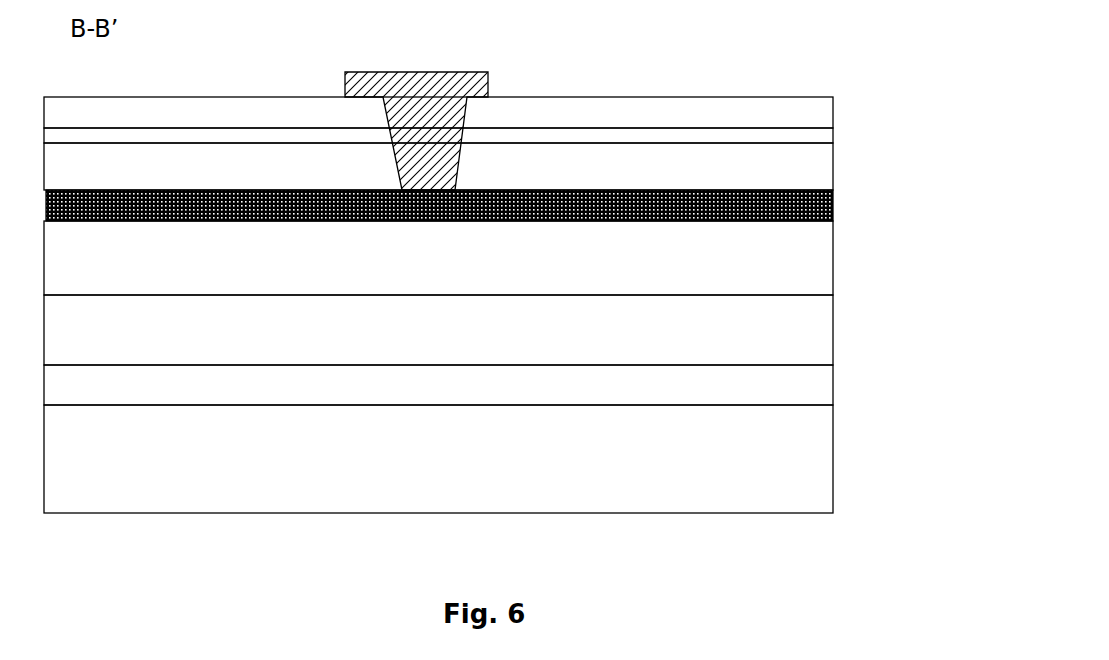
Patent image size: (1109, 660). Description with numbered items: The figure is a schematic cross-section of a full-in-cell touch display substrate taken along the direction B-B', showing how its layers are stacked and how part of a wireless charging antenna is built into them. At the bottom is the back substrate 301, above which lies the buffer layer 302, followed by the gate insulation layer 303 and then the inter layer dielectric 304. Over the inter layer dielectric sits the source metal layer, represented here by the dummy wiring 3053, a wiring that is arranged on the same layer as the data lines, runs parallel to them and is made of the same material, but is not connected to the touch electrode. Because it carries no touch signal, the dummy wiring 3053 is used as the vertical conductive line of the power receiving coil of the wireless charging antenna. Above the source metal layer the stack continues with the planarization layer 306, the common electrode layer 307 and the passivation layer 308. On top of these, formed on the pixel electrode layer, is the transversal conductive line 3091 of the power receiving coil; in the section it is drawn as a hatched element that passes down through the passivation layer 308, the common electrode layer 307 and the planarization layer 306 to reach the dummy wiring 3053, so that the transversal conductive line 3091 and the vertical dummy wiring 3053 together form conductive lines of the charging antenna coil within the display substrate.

The back substrate 301 is at (782, 457).
The buffer layer 302 is at (792, 398).
The gate insulation layer 303 is at (792, 342).
The inter layer dielectric 304 is at (778, 268).
The dummy wiring 3053 is at (808, 212).
The planarization layer 306 is at (795, 167).
The common electrode layer 307 is at (817, 137).
The passivation layer 308 is at (823, 115).
The transversal conductive line 3091 is at (453, 92).